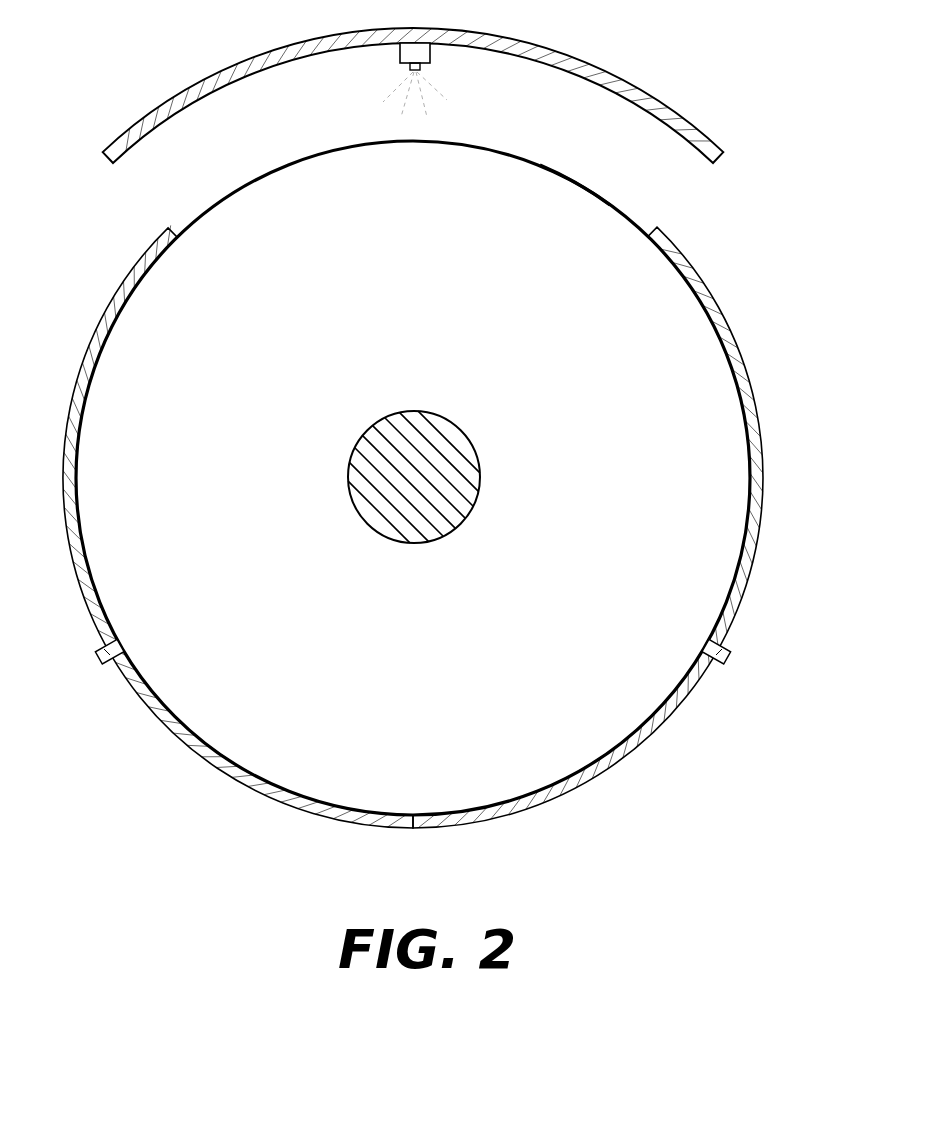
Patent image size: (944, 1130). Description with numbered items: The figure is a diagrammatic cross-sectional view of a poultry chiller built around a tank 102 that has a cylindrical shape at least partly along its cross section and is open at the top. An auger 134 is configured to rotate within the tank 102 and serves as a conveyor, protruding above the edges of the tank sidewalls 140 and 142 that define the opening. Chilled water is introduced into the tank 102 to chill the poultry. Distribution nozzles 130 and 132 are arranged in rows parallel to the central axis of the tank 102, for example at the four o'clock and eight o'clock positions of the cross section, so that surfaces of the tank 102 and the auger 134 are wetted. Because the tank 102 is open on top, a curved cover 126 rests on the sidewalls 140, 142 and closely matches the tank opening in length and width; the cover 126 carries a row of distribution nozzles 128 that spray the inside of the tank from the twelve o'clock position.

The tank 102 is at (751, 392).
The cover 126 is at (598, 70).
The distribution nozzles 128 is at (400, 52).
The distribution nozzle 130 is at (726, 660).
The distribution nozzle 132 is at (102, 660).
The auger 134 is at (573, 182).
The tank sidewall 140 is at (123, 277).
The tank sidewall 142 is at (707, 276).